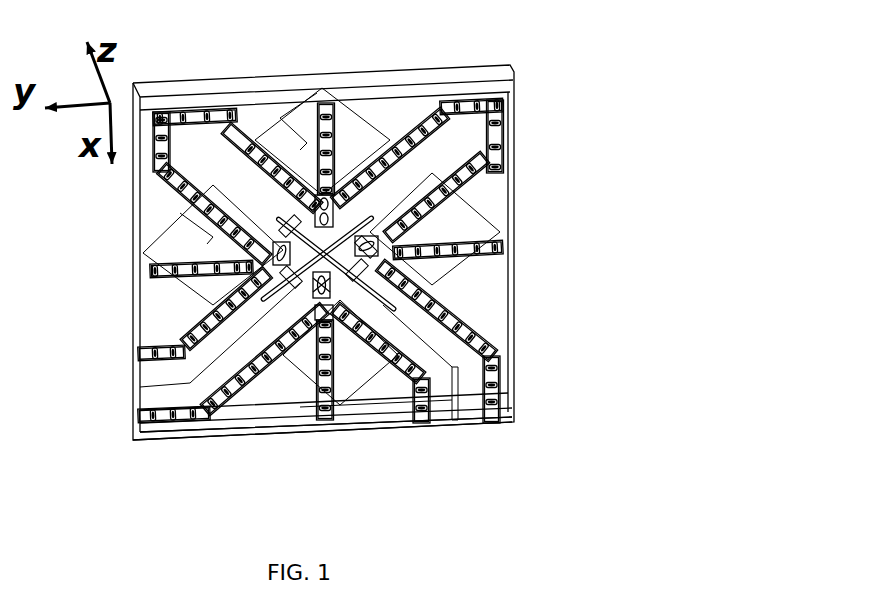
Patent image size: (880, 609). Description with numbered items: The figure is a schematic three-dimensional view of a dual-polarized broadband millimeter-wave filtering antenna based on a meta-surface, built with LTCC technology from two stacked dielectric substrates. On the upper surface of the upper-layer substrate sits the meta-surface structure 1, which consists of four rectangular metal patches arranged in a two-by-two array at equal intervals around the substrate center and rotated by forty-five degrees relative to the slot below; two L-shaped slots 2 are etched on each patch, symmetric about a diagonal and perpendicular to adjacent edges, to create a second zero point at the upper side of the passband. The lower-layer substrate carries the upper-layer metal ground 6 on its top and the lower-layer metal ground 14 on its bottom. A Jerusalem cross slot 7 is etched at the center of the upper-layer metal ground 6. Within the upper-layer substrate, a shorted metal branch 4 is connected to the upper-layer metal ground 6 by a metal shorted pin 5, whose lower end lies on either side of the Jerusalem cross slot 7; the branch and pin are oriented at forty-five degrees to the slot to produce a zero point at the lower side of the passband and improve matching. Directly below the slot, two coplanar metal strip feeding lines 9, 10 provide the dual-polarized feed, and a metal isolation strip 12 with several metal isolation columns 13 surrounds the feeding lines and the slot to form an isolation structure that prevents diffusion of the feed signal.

The meta-surface structure 1 is at (363, 117).
The L-shaped slot 2 is at (293, 117).
The shorted metal branch 4 is at (267, 246).
The metal shorted pin 5 is at (284, 266).
The upper-layer metal ground 6 is at (437, 100).
The Jerusalem cross slot 7 is at (355, 220).
The metal strip feeding line 9 is at (133, 413).
The metal strip feeding line 10 is at (458, 387).
The metal isolation strip 12 is at (250, 373).
The metal isolation column 13 is at (147, 347).
The lower-layer metal ground 14 is at (473, 93).